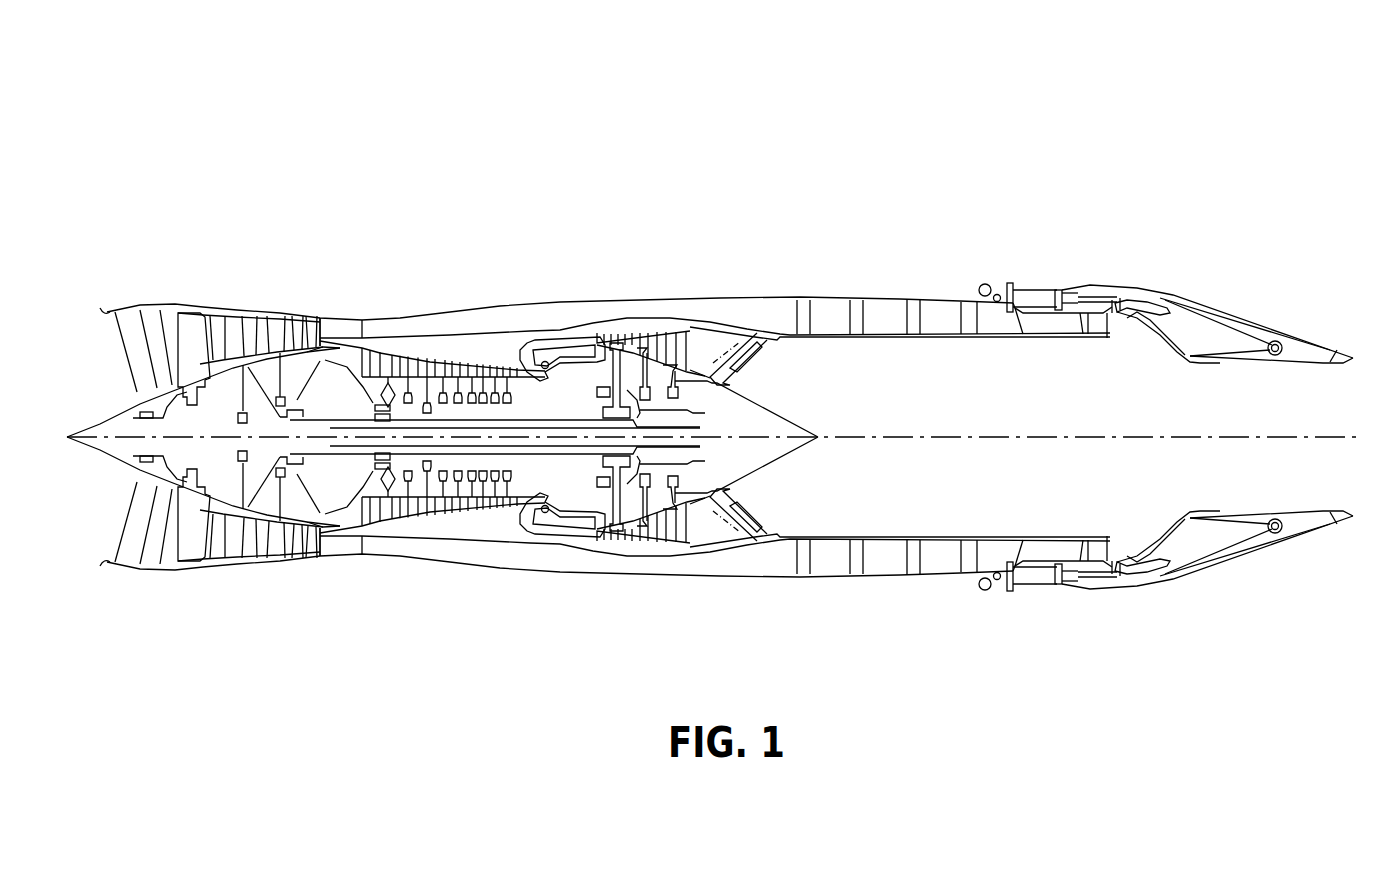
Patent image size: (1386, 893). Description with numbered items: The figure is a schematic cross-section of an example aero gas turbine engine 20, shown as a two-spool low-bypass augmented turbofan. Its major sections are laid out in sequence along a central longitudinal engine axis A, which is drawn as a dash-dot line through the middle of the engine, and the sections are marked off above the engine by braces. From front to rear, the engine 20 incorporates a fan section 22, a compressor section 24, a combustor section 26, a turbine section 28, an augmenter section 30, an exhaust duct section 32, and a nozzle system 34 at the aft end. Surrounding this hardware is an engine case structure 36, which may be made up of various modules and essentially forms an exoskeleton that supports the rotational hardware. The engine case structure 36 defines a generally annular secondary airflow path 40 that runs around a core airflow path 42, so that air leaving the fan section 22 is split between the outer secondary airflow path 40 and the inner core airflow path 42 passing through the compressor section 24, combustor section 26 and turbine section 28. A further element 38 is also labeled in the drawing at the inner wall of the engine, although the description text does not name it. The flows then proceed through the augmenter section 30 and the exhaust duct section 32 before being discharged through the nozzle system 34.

The gas turbine engine 20 is at (1016, 117).
The fan section 22 is at (318, 232).
The compressor section 24 is at (318, 232).
The combustor section 26 is at (610, 232).
The turbine section 28 is at (610, 232).
The augmenter section 30 is at (690, 232).
The exhaust duct section 32 is at (1098, 232).
The nozzle system 34 is at (1098, 232).
The engine case structure 36 is at (642, 579).
The core engine case 38 is at (468, 526).
The secondary airflow path 40 is at (405, 548).
The core airflow path 42 is at (318, 527).
The central longitudinal engine axis A is at (988, 441).